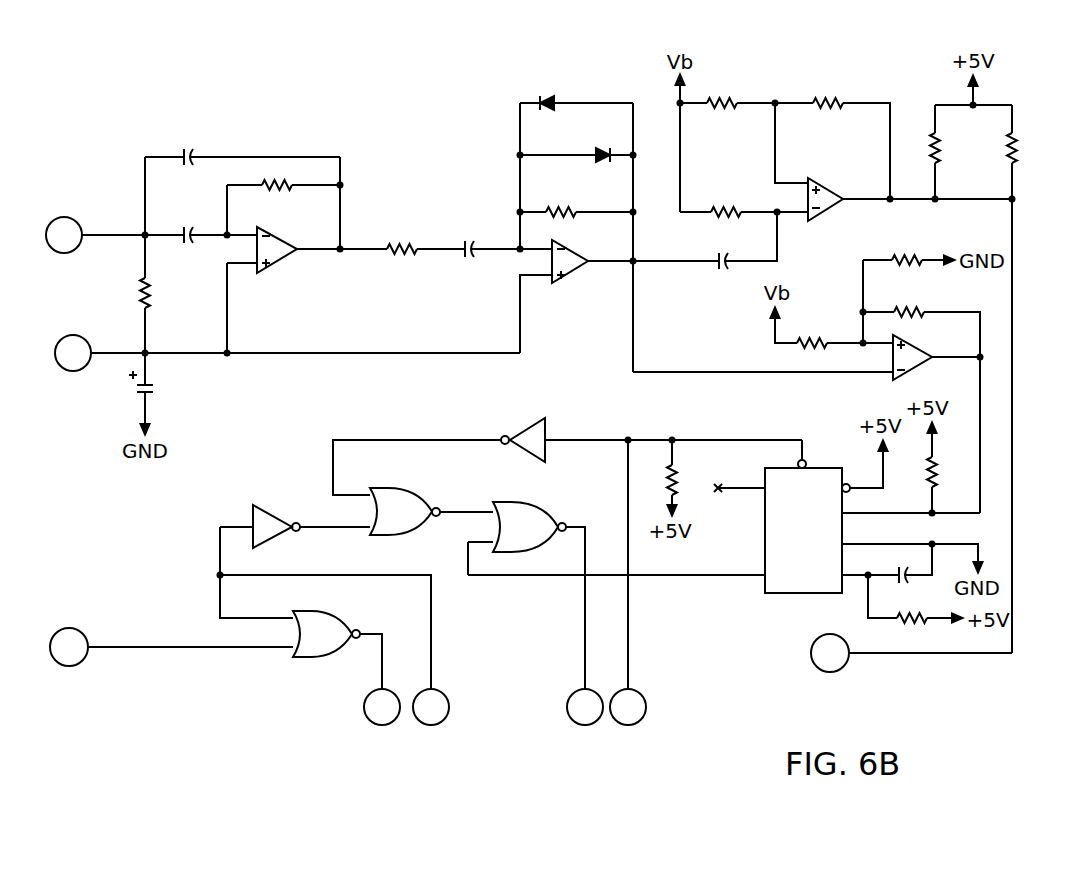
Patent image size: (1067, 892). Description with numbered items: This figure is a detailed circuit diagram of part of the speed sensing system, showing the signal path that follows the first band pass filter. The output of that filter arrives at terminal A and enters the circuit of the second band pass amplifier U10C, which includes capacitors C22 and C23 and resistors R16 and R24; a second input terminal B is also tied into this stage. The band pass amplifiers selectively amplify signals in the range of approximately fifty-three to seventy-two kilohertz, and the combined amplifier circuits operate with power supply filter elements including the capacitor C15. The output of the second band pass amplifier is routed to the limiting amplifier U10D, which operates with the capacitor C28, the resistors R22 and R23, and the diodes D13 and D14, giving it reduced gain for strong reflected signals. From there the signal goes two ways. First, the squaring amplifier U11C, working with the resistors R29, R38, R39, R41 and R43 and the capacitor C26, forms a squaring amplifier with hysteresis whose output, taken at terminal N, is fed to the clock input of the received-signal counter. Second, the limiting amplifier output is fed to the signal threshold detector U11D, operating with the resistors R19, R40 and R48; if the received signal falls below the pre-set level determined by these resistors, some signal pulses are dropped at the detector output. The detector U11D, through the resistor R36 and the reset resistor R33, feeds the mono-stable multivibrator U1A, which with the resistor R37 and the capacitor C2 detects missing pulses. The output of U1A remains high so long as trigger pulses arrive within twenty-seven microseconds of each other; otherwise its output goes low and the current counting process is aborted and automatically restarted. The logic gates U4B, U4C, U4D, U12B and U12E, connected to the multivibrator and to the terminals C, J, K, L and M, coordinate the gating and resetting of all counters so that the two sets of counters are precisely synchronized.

The terminal A is at (64, 235).
The terminal B is at (73, 353).
The terminal C is at (69, 647).
The terminal J is at (382, 707).
The terminal K is at (431, 707).
The terminal L is at (585, 707).
The terminal M is at (628, 707).
The terminal N is at (830, 653).
The capacitor C23 is at (192, 144).
The capacitor C22 is at (191, 223).
The resistor R24 is at (276, 172).
The resistor R16 is at (168, 292).
The capacitor C15 is at (163, 385).
The band pass amplifier U10C is at (295, 256).
The resistor R23 is at (404, 234).
The capacitor C28 is at (471, 235).
The diode D13 is at (548, 91).
The diode D14 is at (608, 141).
The resistor R22 is at (562, 199).
The limiting amplifier U10D is at (588, 267).
The capacitor C26 is at (727, 249).
The resistor R38 is at (721, 91).
The resistor R29 is at (826, 91).
The resistor R39 is at (726, 199).
The squaring amplifier U11C is at (846, 205).
The resistor R43 is at (957, 148).
The resistor R41 is at (1033, 148).
The resistor R48 is at (909, 247).
The resistor R19 is at (909, 300).
The resistor R40 is at (818, 329).
The signal threshold detector U11D is at (930, 364).
The resistor R36 is at (953, 472).
The reset resistor R33 is at (694, 476).
The mono-stable multivibrator U1A is at (807, 541).
The capacitor C2 is at (903, 563).
The resistor R37 is at (912, 605).
The logic gate U12E is at (553, 445).
The logic gate U12B is at (289, 535).
The logic gate U4B is at (410, 523).
The logic gate U4C is at (537, 535).
The logic gate U4D is at (334, 644).